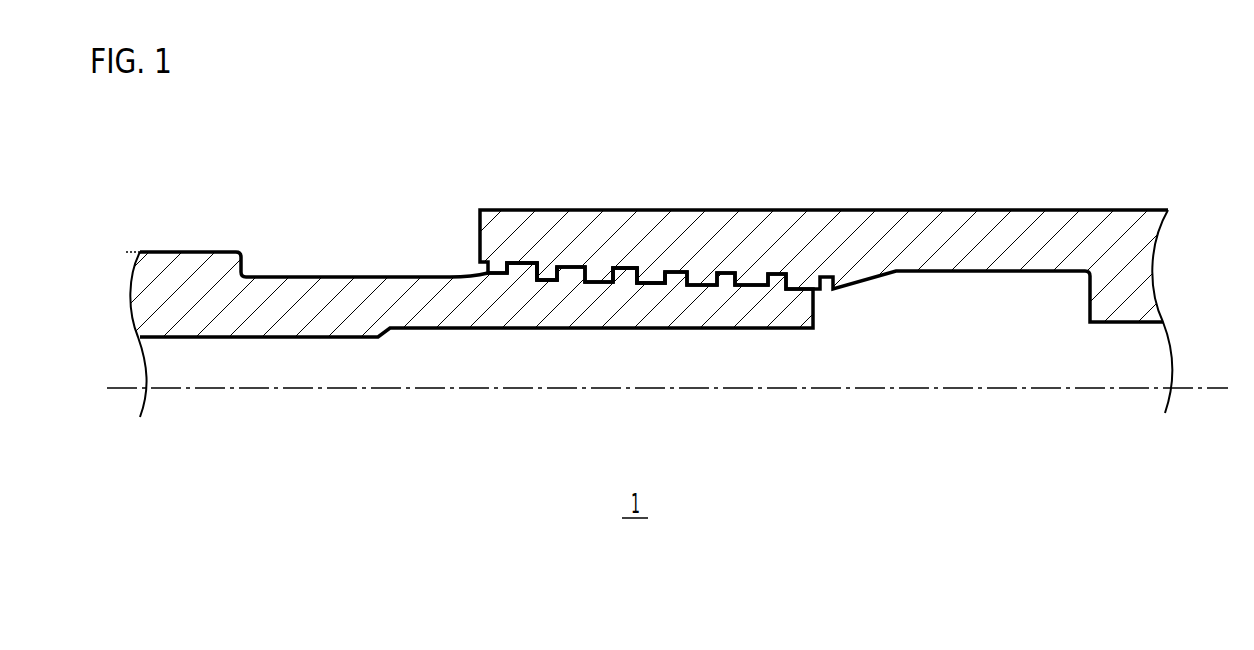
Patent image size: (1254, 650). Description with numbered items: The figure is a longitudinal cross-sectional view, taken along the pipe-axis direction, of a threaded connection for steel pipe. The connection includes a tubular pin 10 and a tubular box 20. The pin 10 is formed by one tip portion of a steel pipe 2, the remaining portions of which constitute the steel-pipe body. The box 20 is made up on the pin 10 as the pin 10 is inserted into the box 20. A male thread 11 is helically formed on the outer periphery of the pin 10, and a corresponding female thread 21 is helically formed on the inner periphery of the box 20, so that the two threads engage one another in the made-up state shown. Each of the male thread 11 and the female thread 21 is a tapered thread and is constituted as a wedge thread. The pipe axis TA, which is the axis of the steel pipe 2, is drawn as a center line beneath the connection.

The steel pipe 2 is at (469, 311).
The pin 10 is at (469, 311).
The male thread 11 is at (625, 271).
The box 20 is at (820, 265).
The female thread 21 is at (651, 281).
The pipe axis TA is at (1202, 388).